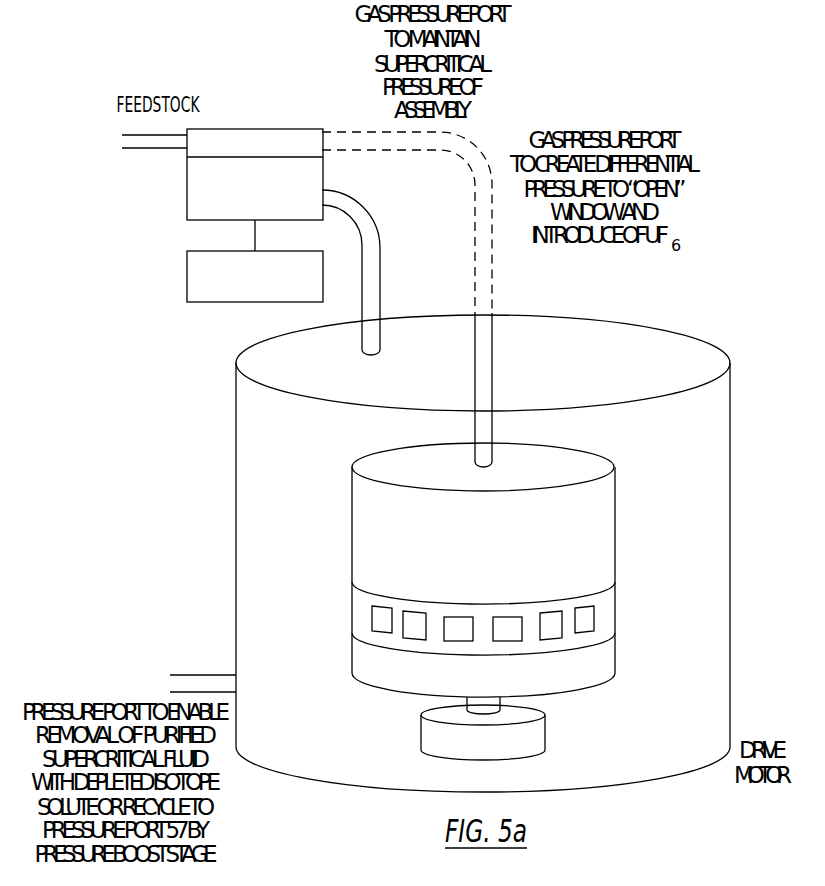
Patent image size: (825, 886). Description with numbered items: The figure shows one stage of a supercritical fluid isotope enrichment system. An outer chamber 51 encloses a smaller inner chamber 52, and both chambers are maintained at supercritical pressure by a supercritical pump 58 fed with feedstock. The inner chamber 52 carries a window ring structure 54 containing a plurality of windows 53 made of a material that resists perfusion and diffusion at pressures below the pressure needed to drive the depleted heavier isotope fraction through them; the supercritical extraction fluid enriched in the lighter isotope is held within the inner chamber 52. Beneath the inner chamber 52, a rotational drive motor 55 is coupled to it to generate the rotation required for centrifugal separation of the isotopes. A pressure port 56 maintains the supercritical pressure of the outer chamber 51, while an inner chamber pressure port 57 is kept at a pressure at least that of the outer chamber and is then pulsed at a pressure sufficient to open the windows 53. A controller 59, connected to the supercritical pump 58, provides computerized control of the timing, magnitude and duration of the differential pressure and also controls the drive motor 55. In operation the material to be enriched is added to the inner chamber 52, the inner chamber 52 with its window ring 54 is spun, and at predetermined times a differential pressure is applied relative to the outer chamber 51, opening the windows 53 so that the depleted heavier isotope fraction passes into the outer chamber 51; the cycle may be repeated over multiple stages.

The outer chamber 51 is at (652, 343).
The inner chamber 52 is at (575, 467).
The window 53 is at (587, 618).
The window ring structure 54 is at (595, 587).
The rotational drive motor 55 is at (537, 740).
The pressure port 56 is at (423, 125).
The inner chamber pressure port 57 is at (488, 303).
The supercritical pump 58 is at (187, 178).
The controller 59 is at (187, 264).